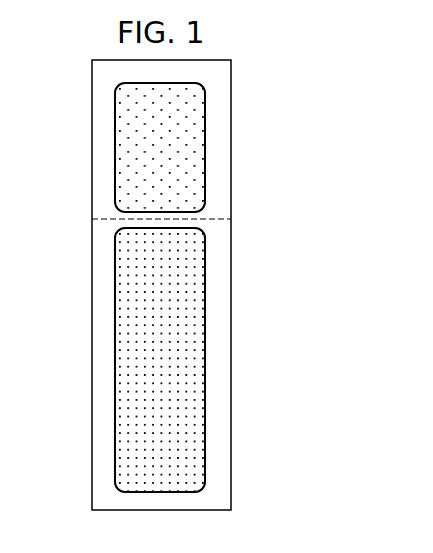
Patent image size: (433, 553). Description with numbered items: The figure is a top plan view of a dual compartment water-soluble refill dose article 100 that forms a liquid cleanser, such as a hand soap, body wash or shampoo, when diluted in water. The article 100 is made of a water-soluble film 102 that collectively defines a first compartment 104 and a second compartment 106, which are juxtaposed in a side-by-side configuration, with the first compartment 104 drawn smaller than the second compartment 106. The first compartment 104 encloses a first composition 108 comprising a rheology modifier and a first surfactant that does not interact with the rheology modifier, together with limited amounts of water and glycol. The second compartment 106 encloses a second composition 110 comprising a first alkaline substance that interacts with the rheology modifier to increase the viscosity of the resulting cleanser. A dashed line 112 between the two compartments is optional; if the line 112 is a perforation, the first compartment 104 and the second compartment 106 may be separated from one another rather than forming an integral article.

The water-soluble refill dose article 100 is at (310, 132).
The water-soluble film 102 is at (92, 140).
The first compartment 104 is at (207, 108).
The second compartment 106 is at (207, 277).
The first composition 108 is at (195, 156).
The second composition 110 is at (195, 328).
The dashed line 112 is at (92, 220).